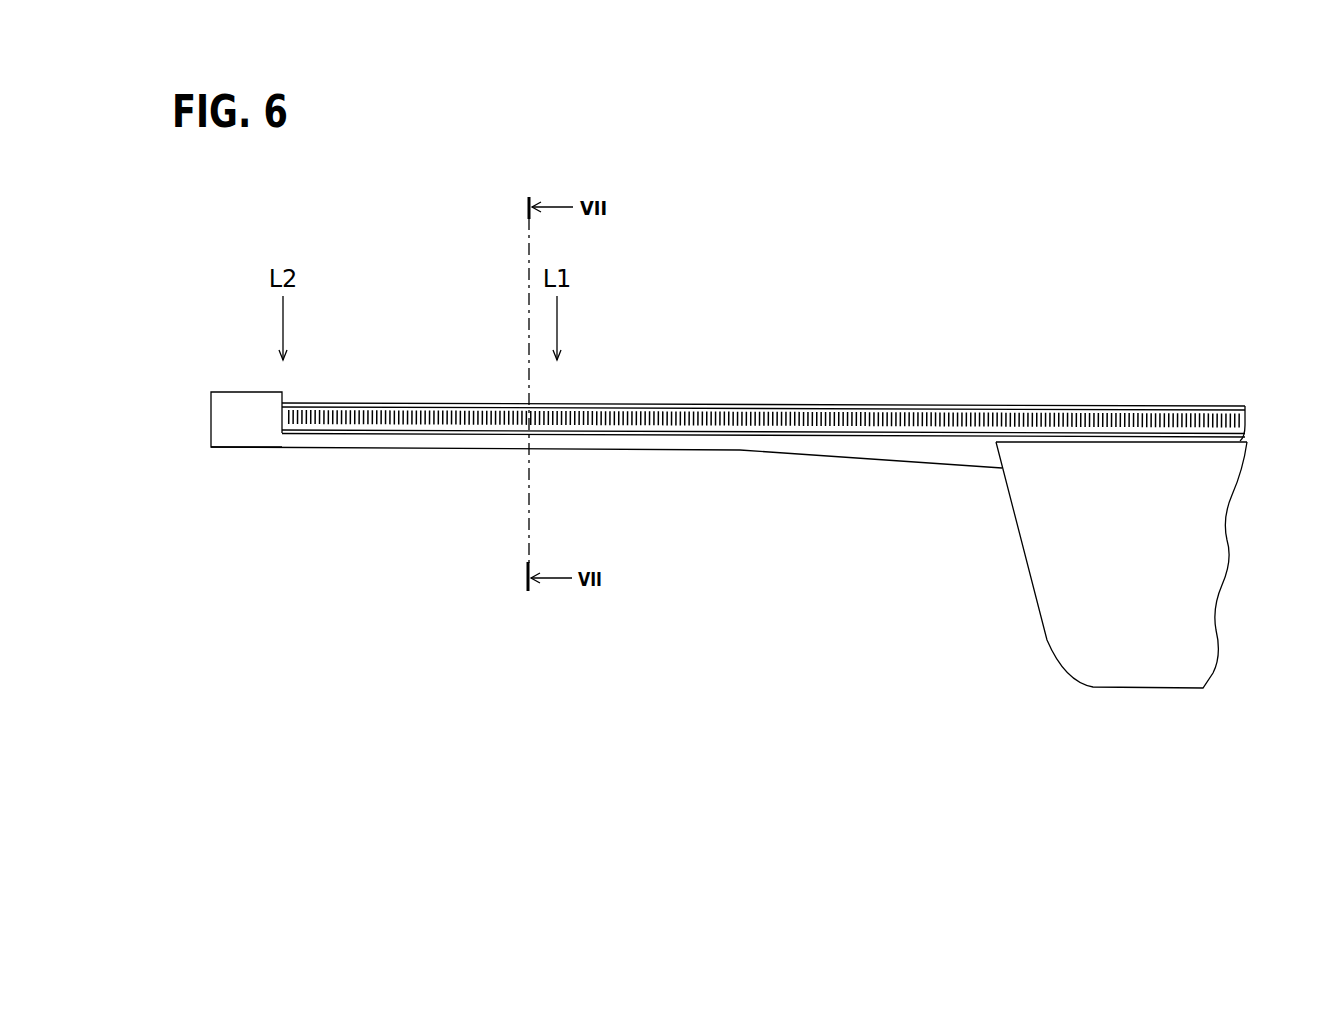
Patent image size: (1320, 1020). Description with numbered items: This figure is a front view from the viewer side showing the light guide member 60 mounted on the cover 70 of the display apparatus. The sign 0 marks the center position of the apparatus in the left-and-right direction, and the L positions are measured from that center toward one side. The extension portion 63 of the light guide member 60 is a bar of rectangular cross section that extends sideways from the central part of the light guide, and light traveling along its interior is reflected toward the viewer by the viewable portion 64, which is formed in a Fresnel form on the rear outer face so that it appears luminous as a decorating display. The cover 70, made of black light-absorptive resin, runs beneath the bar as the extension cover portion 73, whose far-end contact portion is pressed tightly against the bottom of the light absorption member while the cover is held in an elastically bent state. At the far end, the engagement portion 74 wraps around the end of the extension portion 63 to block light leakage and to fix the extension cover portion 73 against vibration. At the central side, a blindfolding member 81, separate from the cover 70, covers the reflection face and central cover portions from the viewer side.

The center position 0 is at (1177, 365).
The light guide member 60 is at (763, 369).
The extension portion 63 is at (450, 402).
The viewable portion 64 is at (371, 418).
The cover 70 is at (695, 460).
The extension cover portion 73 is at (643, 443).
The engagement portion 74 is at (220, 415).
The blindfolding member 81 is at (1097, 664).